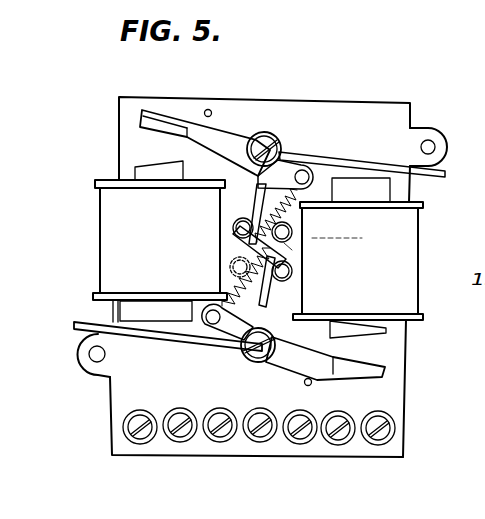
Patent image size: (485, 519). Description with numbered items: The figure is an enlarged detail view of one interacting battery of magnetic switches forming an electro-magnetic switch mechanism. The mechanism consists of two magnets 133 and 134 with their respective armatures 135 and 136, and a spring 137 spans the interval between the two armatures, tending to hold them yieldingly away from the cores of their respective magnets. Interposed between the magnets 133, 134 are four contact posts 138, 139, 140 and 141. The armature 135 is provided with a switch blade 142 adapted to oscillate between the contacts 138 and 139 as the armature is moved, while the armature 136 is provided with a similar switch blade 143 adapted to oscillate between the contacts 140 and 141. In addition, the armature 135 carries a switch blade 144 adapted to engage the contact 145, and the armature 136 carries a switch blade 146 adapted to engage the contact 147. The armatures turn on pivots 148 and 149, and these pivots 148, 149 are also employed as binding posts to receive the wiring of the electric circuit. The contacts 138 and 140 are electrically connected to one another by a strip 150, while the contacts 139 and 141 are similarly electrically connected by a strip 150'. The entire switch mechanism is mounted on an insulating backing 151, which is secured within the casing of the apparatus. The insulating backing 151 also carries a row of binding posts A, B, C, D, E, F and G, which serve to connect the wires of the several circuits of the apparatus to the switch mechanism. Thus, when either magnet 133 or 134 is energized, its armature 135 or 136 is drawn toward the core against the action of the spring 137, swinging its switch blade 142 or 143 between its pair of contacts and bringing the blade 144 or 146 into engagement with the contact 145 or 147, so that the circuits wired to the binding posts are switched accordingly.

The magnet 133 is at (100, 242).
The magnet 134 is at (418, 252).
The armature 135 is at (216, 131).
The armature 136 is at (340, 378).
The spring 137 is at (279, 249).
The contact post 138 is at (238, 224).
The contact post 139 is at (290, 229).
The contact post 140 is at (291, 276).
The contact post 141 is at (233, 267).
The switch blade 142 is at (260, 202).
The switch blade 143 is at (265, 303).
The switch blade 144 is at (365, 161).
The contact 145 is at (437, 146).
The switch blade 146 is at (170, 336).
The contact 147 is at (93, 362).
The pivot 148 is at (271, 143).
The pivot 149 is at (256, 357).
The strip 150 is at (217, 247).
The strip 150' is at (358, 254).
The insulating backing 151 is at (345, 110).
The binding post A is at (142, 440).
The binding post B is at (182, 438).
The binding post C is at (222, 438).
The binding post D is at (262, 438).
The binding post E is at (303, 440).
The binding post F is at (340, 441).
The binding post G is at (379, 441).